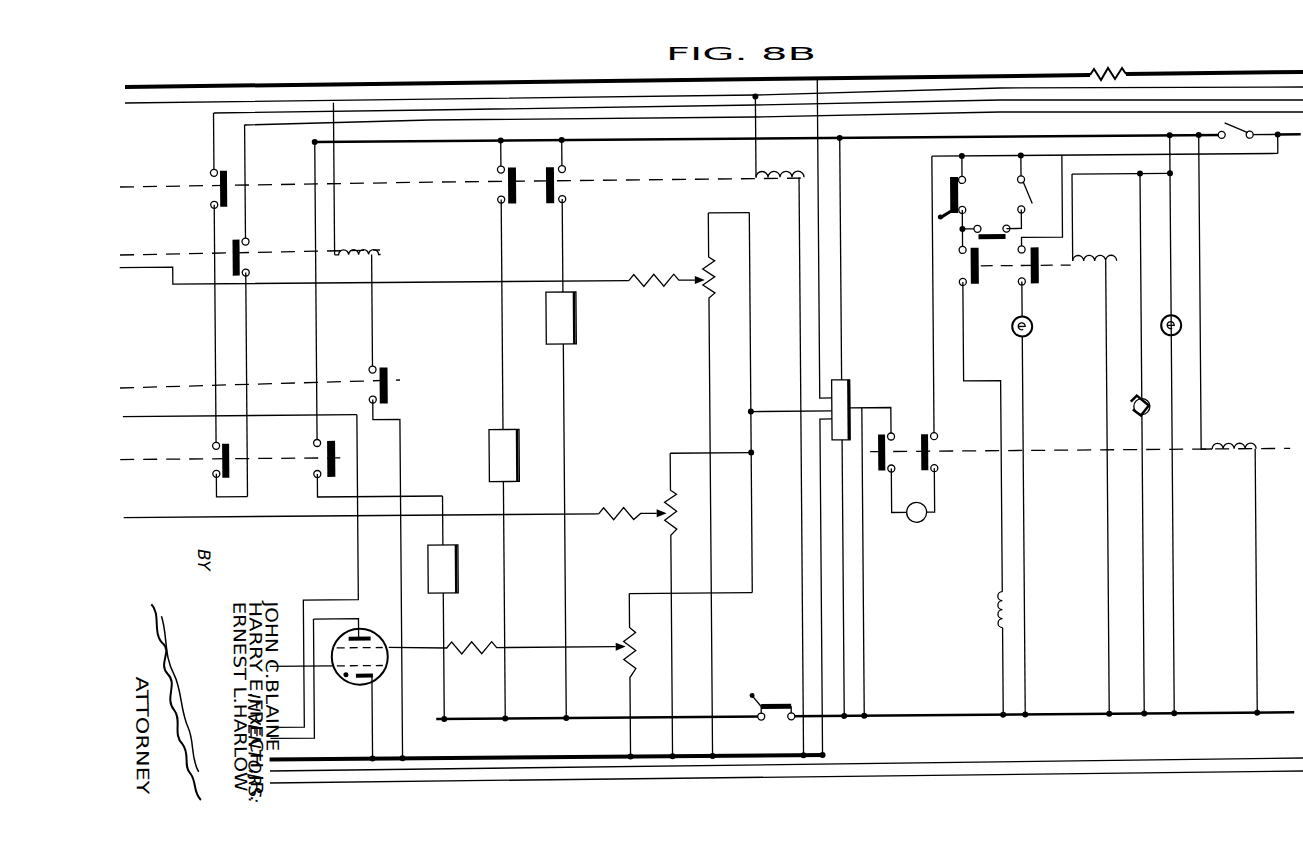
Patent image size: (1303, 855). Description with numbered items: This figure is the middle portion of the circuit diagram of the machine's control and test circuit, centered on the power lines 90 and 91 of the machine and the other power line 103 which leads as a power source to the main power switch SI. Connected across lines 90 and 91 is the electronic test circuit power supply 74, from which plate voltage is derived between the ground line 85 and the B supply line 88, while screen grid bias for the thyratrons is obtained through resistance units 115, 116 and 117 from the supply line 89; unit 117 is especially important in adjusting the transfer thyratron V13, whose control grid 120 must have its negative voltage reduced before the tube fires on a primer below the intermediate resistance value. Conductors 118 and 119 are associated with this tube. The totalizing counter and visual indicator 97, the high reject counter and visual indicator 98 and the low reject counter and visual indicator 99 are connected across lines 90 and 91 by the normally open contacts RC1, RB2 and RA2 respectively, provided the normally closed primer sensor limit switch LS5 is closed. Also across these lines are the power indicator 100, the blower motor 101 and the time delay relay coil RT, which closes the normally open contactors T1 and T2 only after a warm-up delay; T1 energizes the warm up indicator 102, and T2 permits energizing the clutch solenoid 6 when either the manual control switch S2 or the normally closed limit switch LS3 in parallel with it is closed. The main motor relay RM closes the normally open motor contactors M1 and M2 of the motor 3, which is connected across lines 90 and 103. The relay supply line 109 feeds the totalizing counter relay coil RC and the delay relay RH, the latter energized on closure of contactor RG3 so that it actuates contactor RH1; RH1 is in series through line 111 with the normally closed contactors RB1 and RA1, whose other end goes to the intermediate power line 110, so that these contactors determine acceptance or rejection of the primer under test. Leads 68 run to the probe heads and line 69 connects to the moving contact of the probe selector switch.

The B supply line 88 is at (933, 76).
The relay supply line 109 is at (960, 89).
The intermediate power line 110 is at (1166, 101).
The line 111 is at (1081, 116).
The power line 91 is at (622, 140).
The power line 103 is at (1290, 140).
The resistance unit 115 is at (690, 485).
The resistance unit 116 is at (675, 605).
The resistance unit 117 is at (570, 676).
The totalizing counter and visual indicator 97 is at (580, 327).
The high reject counter and visual indicator 98 is at (520, 466).
The low reject counter and visual indicator 99 is at (458, 582).
The electronic test circuit power supply 74 is at (852, 384).
The supply line 89 is at (796, 412).
The warm up indicator 102 is at (1033, 327).
The power indicator 100 is at (1182, 328).
The blower motor 101 is at (1148, 408).
The motor 3 is at (910, 516).
The clutch solenoid 6 is at (996, 596).
The power line 90 is at (486, 715).
The ground line 85 is at (550, 756).
The leads 68 is at (960, 775).
The line 69 is at (1072, 764).
The conductor 118 is at (326, 597).
The conductor 119 is at (314, 721).
The control grid 120 is at (342, 674).
The contactor RB1 is at (230, 279).
The contactor RB2 is at (482, 176).
The contactor RH1 is at (260, 310).
The delay relay RH is at (356, 179).
The contact RC1 is at (574, 175).
The totalizing counter relay coil RC is at (792, 166).
The contactor RG3 is at (398, 506).
The contactor RA1 is at (232, 462).
The contactor RA2 is at (376, 319).
The transfer thyratron V13 is at (394, 624).
The limit switch LS3 is at (950, 202).
The primer sensor limit switch LS5 is at (771, 700).
The manual control switch S2 is at (1029, 190).
The main power switch SI is at (1235, 140).
The contactor T2 is at (980, 419).
The contactor T1 is at (1027, 435).
The time delay relay coil RT is at (1124, 442).
The main motor relay RM is at (1229, 424).
The motor contactor M2 is at (887, 473).
The motor contactor M1 is at (942, 334).